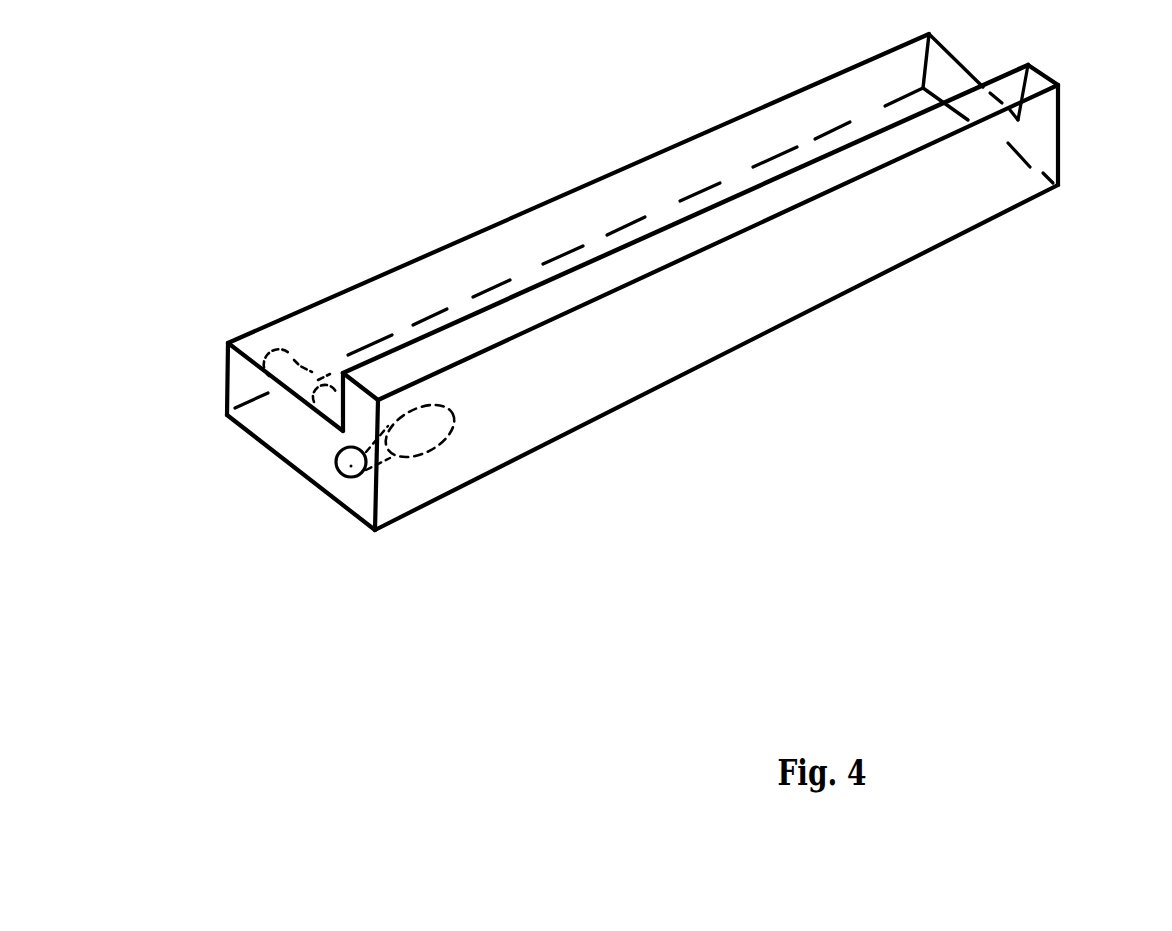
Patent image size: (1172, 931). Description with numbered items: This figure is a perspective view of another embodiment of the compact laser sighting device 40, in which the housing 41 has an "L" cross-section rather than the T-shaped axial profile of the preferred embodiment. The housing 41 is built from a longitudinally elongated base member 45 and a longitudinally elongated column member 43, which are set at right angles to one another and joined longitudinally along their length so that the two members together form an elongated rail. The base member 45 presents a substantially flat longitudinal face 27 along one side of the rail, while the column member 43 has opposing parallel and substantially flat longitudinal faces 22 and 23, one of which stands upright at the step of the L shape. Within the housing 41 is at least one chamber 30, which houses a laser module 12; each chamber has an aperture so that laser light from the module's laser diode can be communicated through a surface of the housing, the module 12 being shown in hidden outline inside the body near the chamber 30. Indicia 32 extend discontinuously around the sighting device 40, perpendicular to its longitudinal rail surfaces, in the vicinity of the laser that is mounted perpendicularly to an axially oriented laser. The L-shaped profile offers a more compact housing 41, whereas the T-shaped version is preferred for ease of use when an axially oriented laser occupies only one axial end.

The sighting device 40 is at (603, 177).
The longitudinal face 23 is at (565, 222).
The indicia 32 is at (264, 347).
The base member 45 is at (1033, 143).
The housing 41 is at (798, 295).
The longitudinal face 27 is at (523, 430).
The laser module 12 is at (456, 422).
The column member 43 is at (272, 430).
The chamber 30 is at (350, 467).
The longitudinal face 22 is at (322, 493).